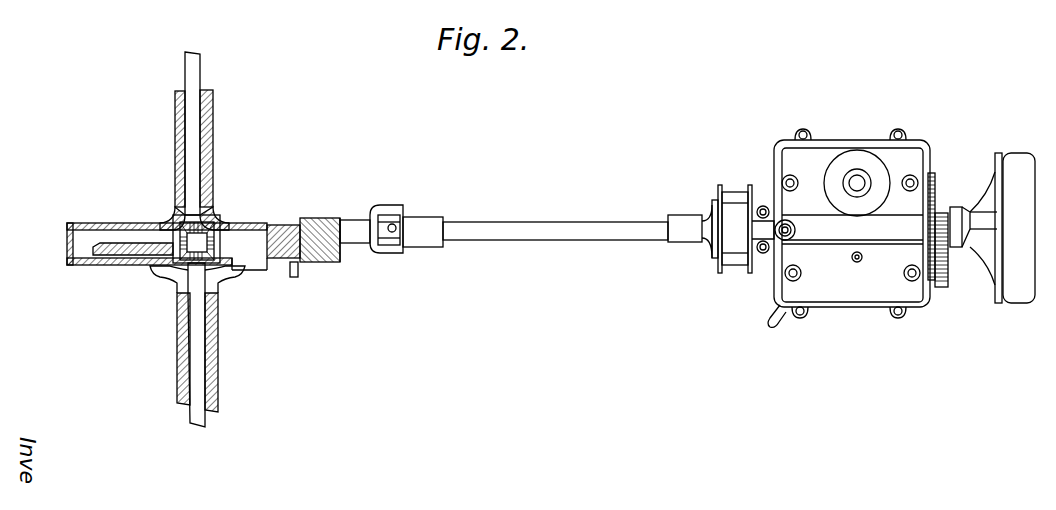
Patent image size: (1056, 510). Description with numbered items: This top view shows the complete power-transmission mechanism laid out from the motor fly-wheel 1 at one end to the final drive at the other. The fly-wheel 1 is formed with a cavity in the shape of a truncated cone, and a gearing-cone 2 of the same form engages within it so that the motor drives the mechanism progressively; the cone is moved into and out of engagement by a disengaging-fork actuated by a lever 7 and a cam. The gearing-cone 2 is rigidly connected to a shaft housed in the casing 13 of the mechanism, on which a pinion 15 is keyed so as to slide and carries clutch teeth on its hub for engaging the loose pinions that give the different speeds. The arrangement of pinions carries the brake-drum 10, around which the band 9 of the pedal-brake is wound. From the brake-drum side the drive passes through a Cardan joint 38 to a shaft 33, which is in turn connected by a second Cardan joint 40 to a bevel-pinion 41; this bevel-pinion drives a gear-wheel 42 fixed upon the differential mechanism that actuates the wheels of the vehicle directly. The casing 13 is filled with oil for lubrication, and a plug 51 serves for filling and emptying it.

The fly-wheel 1 is at (1002, 228).
The gearing-cone 2 is at (973, 227).
The lever 7 is at (777, 323).
The band 9 is at (735, 229).
The brake-drum 10 is at (716, 274).
The casing 13 is at (852, 223).
The pinion 15 is at (957, 258).
The shaft 33 is at (555, 231).
The Cardan joint 38 is at (690, 231).
The second Cardan joint 40 is at (423, 232).
The bevel-pinion 41 is at (298, 236).
The gear-wheel 42 is at (133, 245).
The plug 51 is at (866, 266).